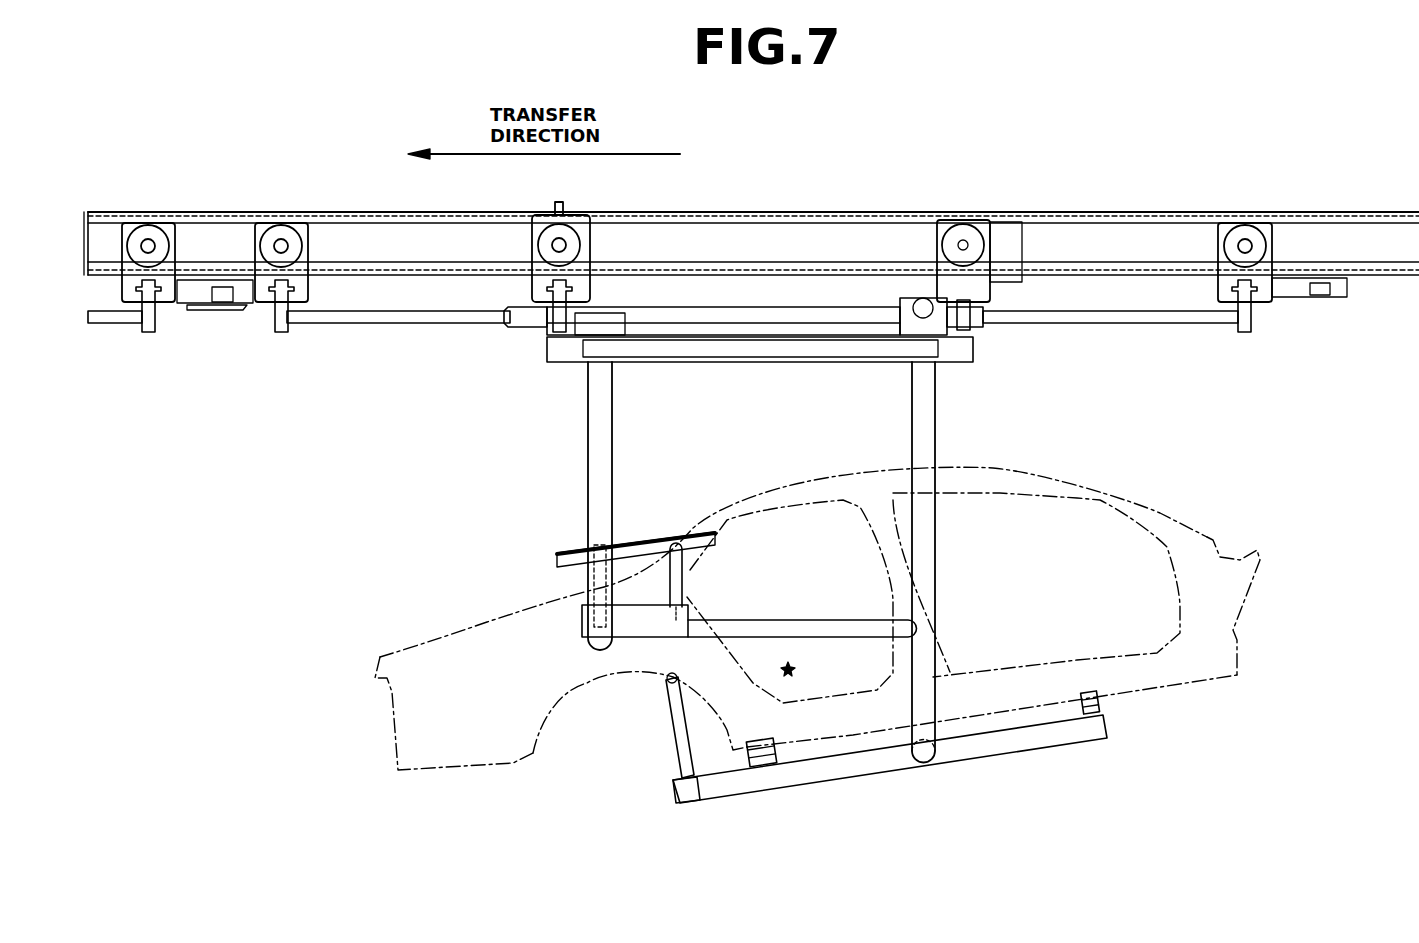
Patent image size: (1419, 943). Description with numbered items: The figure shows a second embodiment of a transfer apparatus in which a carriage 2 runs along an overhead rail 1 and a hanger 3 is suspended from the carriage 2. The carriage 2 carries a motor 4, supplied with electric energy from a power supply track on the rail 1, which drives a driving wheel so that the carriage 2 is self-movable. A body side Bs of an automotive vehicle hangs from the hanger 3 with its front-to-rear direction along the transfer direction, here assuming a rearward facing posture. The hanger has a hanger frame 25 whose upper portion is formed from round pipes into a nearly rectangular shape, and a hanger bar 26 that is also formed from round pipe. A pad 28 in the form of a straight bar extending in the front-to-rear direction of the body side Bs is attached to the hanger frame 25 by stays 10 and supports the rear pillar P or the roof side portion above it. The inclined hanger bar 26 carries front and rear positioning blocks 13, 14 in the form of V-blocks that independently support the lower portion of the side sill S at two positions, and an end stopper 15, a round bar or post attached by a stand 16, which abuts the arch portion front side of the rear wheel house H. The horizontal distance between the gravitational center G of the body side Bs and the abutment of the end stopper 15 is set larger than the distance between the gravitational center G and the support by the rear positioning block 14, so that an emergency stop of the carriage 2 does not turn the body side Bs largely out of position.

The rail 1 is at (1105, 200).
The carriage 2 is at (737, 298).
The hanger 3 is at (578, 443).
The motor 4 is at (963, 238).
The stays 10 is at (587, 583).
The positioning block 13 is at (1087, 690).
The positioning block 14 is at (775, 750).
The end stopper 15 is at (670, 684).
The stand 16 is at (673, 752).
The hanger frame 25 is at (928, 408).
The hanger bar 26 is at (960, 765).
The pad 28 is at (637, 540).
The body side Bs is at (1133, 485).
The side sill S is at (1193, 682).
The rear wheel house H is at (590, 690).
The rear pillar P is at (737, 653).
The gravitational center G is at (790, 665).